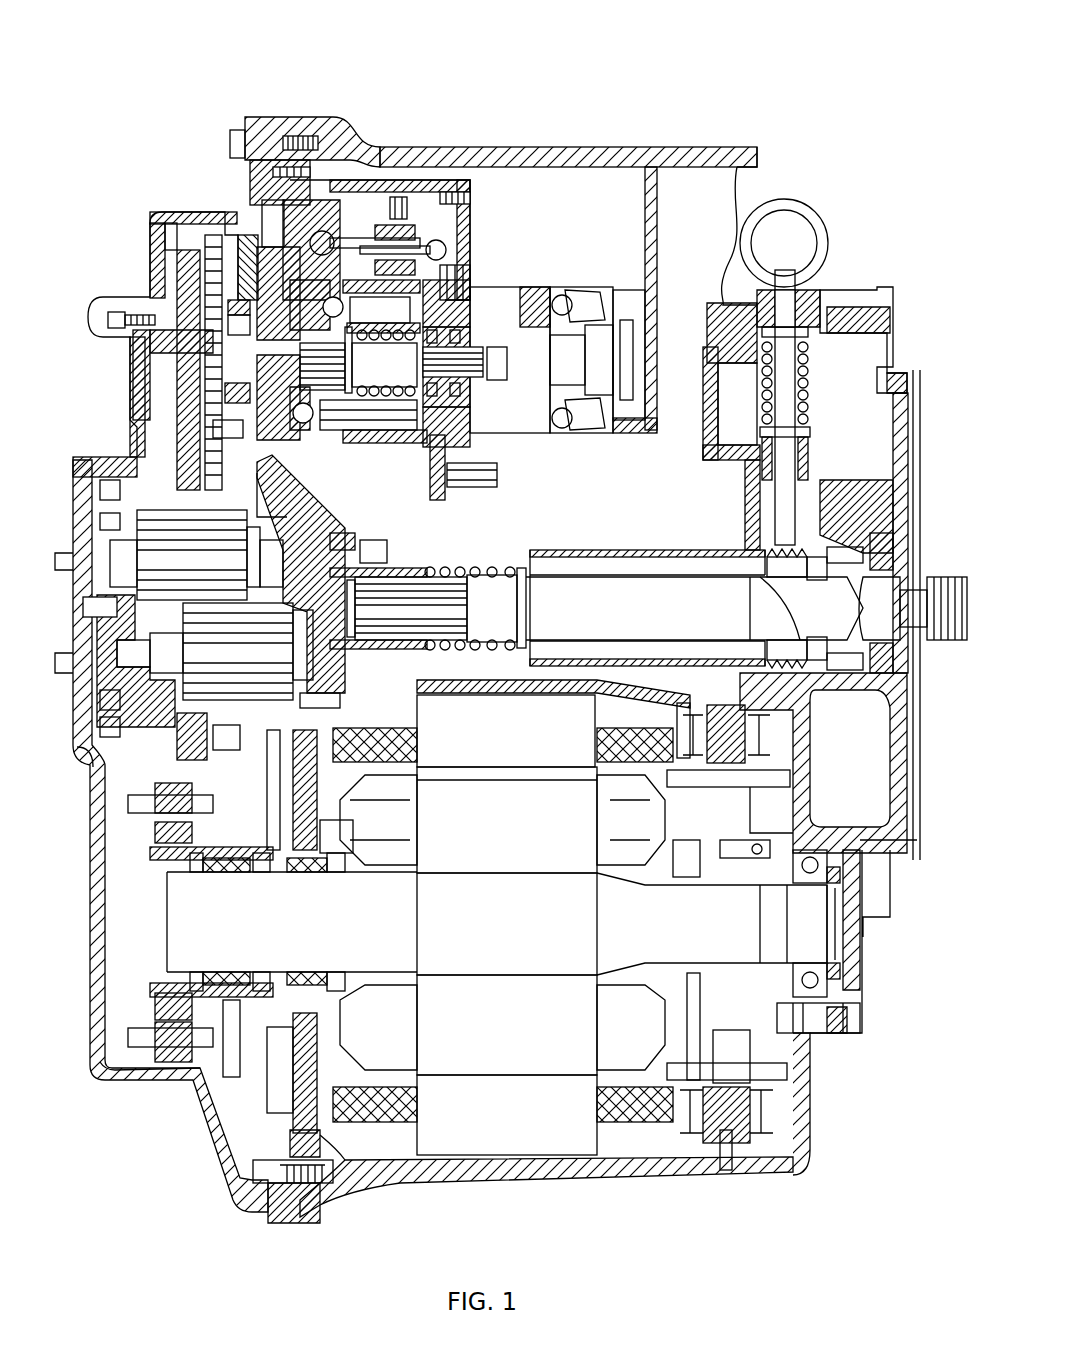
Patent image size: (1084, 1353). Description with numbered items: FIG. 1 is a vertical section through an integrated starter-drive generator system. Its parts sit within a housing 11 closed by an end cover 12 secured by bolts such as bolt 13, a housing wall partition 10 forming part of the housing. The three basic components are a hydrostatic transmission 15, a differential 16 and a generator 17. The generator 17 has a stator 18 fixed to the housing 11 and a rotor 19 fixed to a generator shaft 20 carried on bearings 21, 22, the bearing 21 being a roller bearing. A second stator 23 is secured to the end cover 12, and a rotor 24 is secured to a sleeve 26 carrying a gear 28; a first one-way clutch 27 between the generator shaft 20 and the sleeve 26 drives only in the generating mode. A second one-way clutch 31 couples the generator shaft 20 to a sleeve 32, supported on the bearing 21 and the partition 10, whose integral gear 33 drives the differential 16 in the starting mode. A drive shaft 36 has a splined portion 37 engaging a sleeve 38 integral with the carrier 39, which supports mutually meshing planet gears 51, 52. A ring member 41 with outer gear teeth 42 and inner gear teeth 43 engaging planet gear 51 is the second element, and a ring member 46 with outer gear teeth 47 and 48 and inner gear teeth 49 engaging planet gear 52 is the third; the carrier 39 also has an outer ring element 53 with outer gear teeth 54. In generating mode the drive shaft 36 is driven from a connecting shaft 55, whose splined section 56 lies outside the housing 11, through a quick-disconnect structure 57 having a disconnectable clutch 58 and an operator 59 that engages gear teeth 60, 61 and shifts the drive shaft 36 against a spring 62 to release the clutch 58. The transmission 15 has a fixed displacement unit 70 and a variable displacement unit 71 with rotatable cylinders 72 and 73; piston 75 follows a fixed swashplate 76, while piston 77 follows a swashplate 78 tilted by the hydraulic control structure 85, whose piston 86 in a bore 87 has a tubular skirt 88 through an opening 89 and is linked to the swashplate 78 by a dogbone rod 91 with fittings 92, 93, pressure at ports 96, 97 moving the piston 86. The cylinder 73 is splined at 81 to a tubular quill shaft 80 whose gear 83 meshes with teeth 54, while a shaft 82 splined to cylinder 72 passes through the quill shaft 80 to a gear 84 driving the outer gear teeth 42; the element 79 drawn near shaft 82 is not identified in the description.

The housing wall partition 10 is at (350, 1188).
The housing 11 is at (716, 150).
The end cover 12 is at (252, 128).
The bolt 13 is at (240, 128).
The hydrostatic transmission 15 is at (570, 238).
The differential 16 is at (340, 496).
The generator 17 is at (407, 1148).
The stator 18 is at (494, 1122).
The rotor 19 is at (481, 1029).
The generator shaft 20 is at (491, 932).
The bearing 21 is at (340, 845).
The bearing 22 is at (820, 983).
The second stator 23 is at (165, 1068).
The rotor 24 is at (157, 1013).
The sleeve 26 is at (160, 993).
The first one-way clutch 27 is at (225, 975).
The gear 28 is at (228, 1150).
The second one-way clutch 31 is at (312, 869).
The sleeve 32 is at (370, 852).
The gear 33 is at (268, 792).
The drive shaft 36 is at (496, 588).
The splined portion 37 is at (389, 617).
The sleeve 38 is at (392, 645).
The carrier 39 is at (362, 537).
The ring member 41 is at (150, 468).
The outer gear teeth 42 is at (200, 490).
The inner gear teeth 43 is at (105, 472).
The ring member 46 is at (333, 517).
The outer gear teeth 47 is at (120, 312).
The outer gear teeth 48 is at (185, 330).
The inner gear teeth 49 is at (330, 693).
The planet gear 51 is at (181, 569).
The planet gear 52 is at (214, 664).
The outer ring element 53 is at (205, 440).
The outer gear teeth 54 is at (158, 400).
The connecting shaft 55 is at (914, 585).
The splined section 56 is at (938, 642).
The quick-disconnect structure 57 is at (724, 523).
The disconnectable clutch 58 is at (752, 612).
The quick-disconnect operator 59 is at (812, 443).
The gear teeth 60 is at (820, 545).
The gear teeth 61 is at (770, 555).
The spring 62 is at (497, 647).
The fixed displacement unit 70 is at (555, 285).
The variable displacement unit 71 is at (362, 282).
The rotatable cylinder 72 is at (590, 428).
The rotatable cylinder 73 is at (272, 200).
The piston 75 is at (590, 428).
The swashplate 76 is at (592, 287).
The piston 77 is at (470, 300).
The swashplate 78 is at (248, 300).
The splined shaft 79 is at (458, 430).
The tubular quill shaft 80 is at (238, 300).
The spline 81 is at (240, 315).
The shaft 82 is at (472, 370).
The gear 83 is at (172, 245).
The gear 84 is at (165, 260).
The hydraulic control structure 85 is at (450, 180).
The piston 86 is at (419, 228).
The bore 87 is at (440, 240).
The tubular skirt 88 is at (340, 275).
The opening 89 is at (370, 225).
The dogbone rod 91 is at (553, 268).
The fitting 92 is at (292, 200).
The fitting 93 is at (523, 293).
The port 96 is at (397, 195).
The port 97 is at (457, 285).